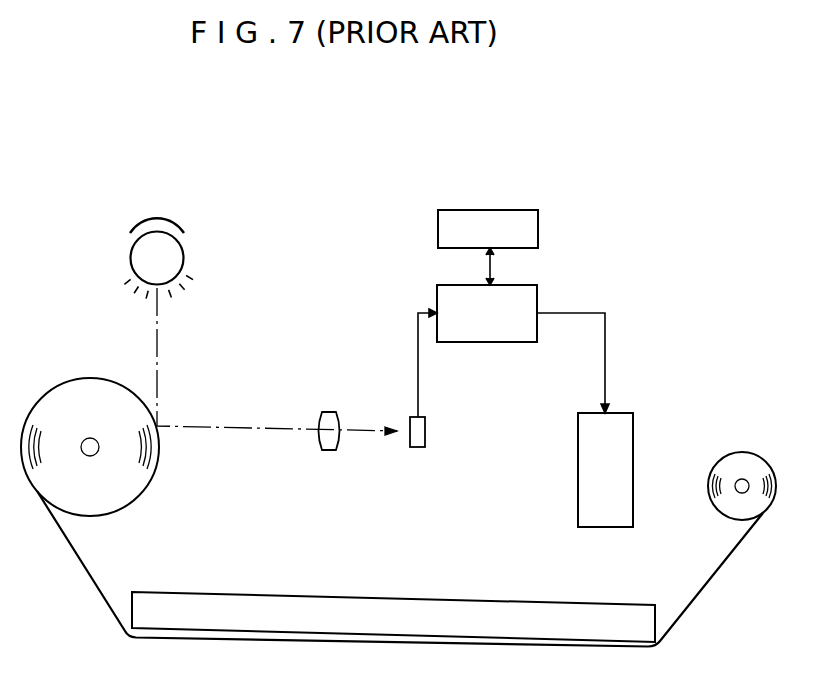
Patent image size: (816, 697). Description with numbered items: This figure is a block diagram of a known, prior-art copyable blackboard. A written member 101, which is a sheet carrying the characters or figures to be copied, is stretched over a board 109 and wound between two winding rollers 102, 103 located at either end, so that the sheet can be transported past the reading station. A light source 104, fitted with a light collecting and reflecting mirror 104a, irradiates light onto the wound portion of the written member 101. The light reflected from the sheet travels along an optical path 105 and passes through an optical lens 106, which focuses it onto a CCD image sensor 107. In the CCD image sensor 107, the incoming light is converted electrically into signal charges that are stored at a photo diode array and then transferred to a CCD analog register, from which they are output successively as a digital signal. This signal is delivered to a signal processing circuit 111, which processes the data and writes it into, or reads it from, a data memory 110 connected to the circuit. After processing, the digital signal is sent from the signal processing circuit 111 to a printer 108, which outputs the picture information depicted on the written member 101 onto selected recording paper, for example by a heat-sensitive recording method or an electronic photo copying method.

The written member 101 is at (100, 598).
The winding roller 102 is at (83, 437).
The winding roller 103 is at (747, 478).
The light source 104 is at (184, 257).
The light collecting and reflecting mirror 104a is at (182, 231).
The optical path 105 is at (247, 428).
The optical lens 106 is at (333, 420).
The CCD image sensor 107 is at (417, 448).
The printer 108 is at (633, 433).
The board 109 is at (438, 615).
The data memory 110 is at (530, 212).
The signal processing circuit 111 is at (532, 285).